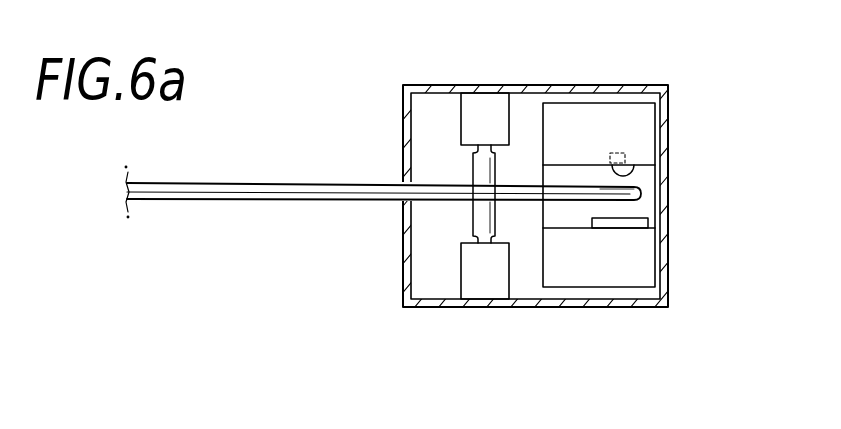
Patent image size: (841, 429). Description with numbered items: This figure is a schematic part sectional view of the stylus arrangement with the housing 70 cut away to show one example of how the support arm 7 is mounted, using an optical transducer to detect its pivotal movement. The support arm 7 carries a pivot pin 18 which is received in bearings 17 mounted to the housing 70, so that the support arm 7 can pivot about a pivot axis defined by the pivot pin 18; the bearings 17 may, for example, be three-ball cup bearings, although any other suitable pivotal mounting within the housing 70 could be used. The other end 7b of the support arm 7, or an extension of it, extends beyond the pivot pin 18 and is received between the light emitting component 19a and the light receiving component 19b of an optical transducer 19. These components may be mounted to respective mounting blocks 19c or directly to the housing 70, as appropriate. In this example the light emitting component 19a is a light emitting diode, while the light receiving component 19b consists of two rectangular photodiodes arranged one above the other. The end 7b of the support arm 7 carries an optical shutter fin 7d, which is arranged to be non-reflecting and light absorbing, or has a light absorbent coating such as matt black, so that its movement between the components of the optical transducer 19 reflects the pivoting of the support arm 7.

The support arm 7 is at (270, 200).
The other end of the support arm 7b is at (602, 200).
The optical shutter fin 7d is at (642, 201).
The bearings 17 is at (475, 107).
The pivot pin 18 is at (480, 207).
The optical transducer 19 is at (647, 188).
The light emitting component 19a is at (642, 163).
The light receiving component 19b is at (602, 226).
The mounting blocks 19c is at (635, 122).
The housing 70 is at (557, 86).